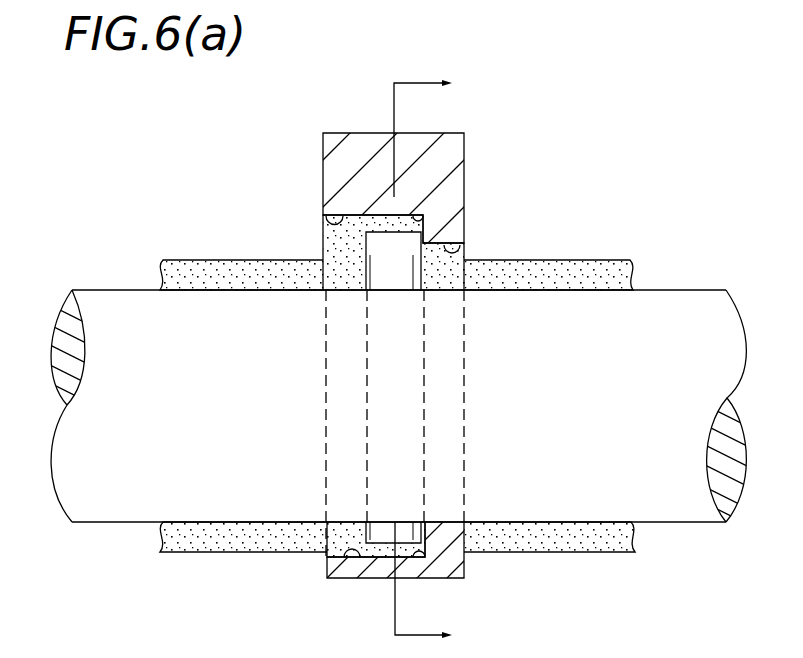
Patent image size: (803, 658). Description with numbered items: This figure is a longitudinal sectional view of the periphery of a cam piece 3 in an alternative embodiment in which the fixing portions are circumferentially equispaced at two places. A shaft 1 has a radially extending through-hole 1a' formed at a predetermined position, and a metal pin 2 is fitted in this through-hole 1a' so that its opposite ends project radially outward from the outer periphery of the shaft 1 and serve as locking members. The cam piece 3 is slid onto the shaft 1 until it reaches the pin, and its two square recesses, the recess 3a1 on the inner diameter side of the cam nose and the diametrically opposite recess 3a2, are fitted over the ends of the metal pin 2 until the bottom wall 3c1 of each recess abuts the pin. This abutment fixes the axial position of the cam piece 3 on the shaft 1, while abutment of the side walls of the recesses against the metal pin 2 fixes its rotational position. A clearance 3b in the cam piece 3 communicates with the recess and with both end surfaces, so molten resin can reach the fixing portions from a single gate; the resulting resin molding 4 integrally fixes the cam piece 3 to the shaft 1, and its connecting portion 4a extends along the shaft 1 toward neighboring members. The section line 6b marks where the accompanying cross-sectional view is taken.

The shaft 1 is at (78, 285).
The through-hole 1a' is at (360, 423).
The metal pin 2 is at (348, 243).
The cam piece 3 is at (474, 180).
The recess 3a1 is at (326, 218).
The recess 3a2 is at (362, 547).
The clearance 3b is at (463, 260).
The bottom wall 3c1 is at (412, 214).
The resin molding 4 is at (314, 253).
The connecting portion 4a is at (205, 543).
The section line b-b 6b is at (442, 356).